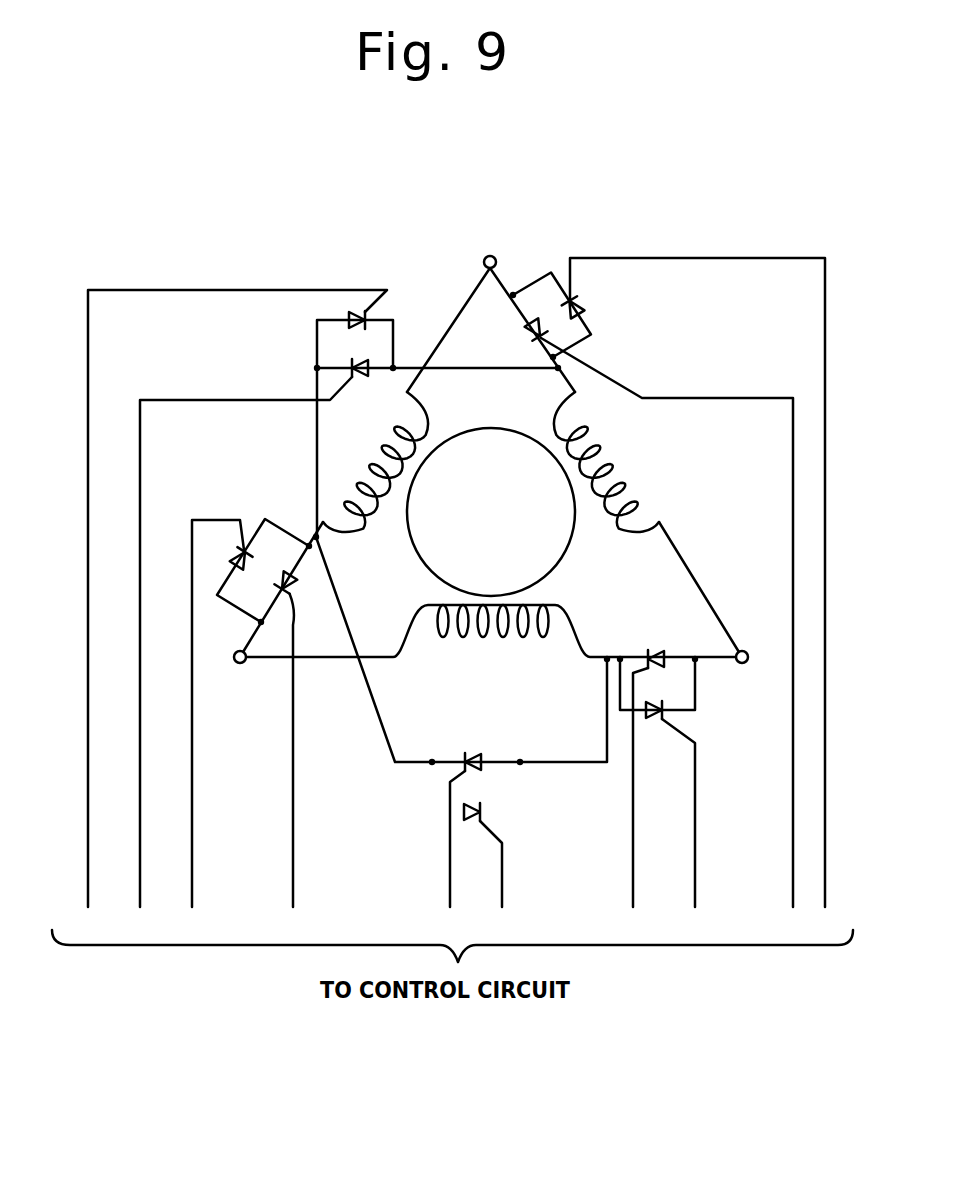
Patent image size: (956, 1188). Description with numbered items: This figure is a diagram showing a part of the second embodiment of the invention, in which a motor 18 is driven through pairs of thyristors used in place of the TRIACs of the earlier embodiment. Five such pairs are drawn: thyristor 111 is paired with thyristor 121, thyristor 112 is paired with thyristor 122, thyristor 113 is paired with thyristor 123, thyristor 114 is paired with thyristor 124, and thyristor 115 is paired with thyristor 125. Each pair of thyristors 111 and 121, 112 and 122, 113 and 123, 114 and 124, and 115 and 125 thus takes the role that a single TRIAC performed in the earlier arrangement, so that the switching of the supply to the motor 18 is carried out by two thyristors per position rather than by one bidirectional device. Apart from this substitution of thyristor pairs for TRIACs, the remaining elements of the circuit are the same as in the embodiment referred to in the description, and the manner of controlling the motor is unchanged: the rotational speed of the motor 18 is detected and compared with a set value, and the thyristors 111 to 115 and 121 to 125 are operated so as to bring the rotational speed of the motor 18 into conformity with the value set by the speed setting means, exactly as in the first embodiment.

The motor 18 is at (499, 428).
The thyristor 111 is at (465, 752).
The thyristor 112 is at (358, 311).
The thyristor 113 is at (526, 323).
The thyristor 114 is at (238, 548).
The thyristor 115 is at (648, 652).
The thyristor 121 is at (467, 820).
The thyristor 122 is at (358, 378).
The thyristor 123 is at (578, 297).
The thyristor 124 is at (283, 594).
The thyristor 125 is at (655, 720).